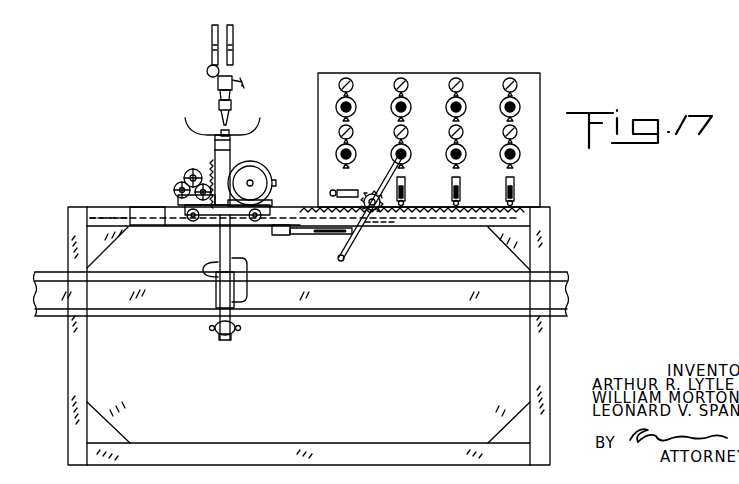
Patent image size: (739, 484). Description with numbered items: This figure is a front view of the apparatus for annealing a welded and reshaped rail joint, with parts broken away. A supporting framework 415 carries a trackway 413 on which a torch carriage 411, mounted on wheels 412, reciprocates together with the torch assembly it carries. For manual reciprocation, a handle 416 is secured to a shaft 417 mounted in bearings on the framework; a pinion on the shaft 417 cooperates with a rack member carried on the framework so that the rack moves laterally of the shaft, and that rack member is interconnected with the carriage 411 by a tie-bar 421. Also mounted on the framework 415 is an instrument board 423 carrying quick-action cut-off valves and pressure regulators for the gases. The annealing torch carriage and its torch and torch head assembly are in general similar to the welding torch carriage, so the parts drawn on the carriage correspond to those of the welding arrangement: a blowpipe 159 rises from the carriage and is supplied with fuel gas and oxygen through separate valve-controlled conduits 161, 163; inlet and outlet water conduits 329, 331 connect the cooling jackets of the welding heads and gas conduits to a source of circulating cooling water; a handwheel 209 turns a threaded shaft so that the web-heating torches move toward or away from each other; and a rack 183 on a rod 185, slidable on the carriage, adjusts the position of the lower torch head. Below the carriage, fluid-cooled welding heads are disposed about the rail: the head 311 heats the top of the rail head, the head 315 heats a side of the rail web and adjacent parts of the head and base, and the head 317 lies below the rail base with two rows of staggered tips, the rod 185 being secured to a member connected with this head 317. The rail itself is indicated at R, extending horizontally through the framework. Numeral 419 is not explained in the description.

The valve-controlled conduit 161 is at (210, 40).
The valve-controlled conduit 163 is at (236, 32).
The inlet water conduit 329 is at (185, 118).
The outlet water conduit 331 is at (258, 123).
The rack 183 is at (212, 160).
The blowpipe 159 is at (216, 145).
The handwheel 209 is at (255, 170).
The supporting framework 415 is at (113, 202).
The torch carriage 411 is at (178, 207).
The trackway 413 is at (145, 228).
The wheels 412 is at (197, 222).
The welding head 311 is at (236, 266).
The tie-bar 421 is at (323, 232).
The welding head 315 is at (216, 294).
The rod 185 is at (214, 325).
The welding head 317 is at (241, 329).
The instrument board 423 is at (470, 73).
The shaft 417 is at (381, 204).
The handle 416 is at (344, 258).
The hidden link 419 is at (388, 213).
The pipe rail R is at (385, 312).